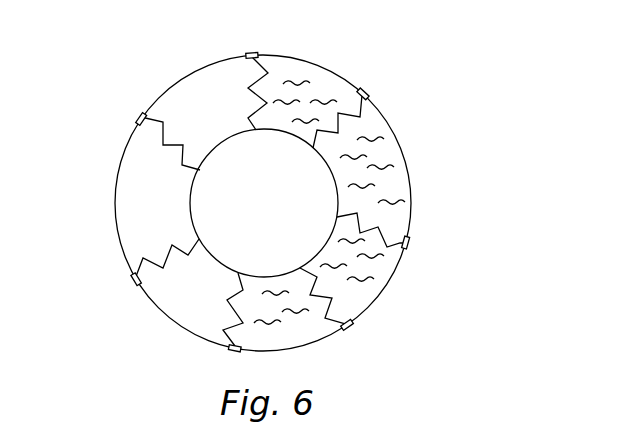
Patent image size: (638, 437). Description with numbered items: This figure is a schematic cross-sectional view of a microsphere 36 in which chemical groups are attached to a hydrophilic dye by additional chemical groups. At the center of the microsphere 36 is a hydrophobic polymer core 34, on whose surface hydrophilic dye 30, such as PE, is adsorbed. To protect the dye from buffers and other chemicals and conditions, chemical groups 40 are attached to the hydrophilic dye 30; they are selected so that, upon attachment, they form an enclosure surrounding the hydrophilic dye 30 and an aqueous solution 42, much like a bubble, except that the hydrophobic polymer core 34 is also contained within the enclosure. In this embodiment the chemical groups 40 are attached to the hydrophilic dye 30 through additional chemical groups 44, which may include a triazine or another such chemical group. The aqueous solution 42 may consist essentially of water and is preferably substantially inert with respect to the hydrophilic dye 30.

The hydrophilic dye 30 is at (367, 102).
The hydrophobic polymer core 34 is at (278, 218).
The microsphere 36 is at (492, 175).
The chemical groups 40 is at (377, 300).
The aqueous solution 42 is at (386, 164).
The additional chemical groups 44 is at (244, 55).